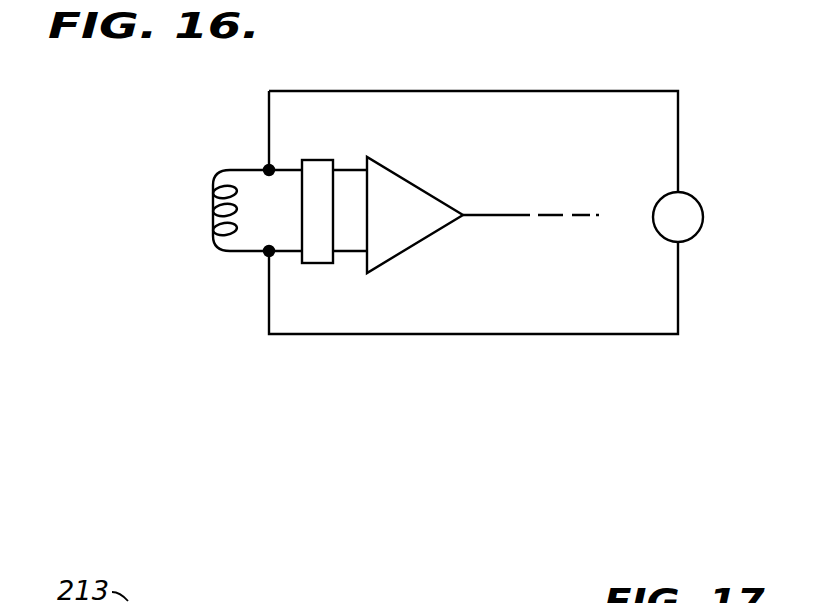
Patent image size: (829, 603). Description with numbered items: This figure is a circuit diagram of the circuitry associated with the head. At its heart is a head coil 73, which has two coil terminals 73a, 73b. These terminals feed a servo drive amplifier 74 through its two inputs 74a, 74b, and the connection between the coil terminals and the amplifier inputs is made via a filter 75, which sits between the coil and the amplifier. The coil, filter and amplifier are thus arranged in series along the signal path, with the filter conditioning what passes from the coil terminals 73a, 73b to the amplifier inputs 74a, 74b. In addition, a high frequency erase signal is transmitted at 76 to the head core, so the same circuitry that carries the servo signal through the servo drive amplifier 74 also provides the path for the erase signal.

The head coil 73 is at (213, 207).
The coil terminal 73a is at (245, 170).
The coil terminal 73b is at (236, 251).
The servo drive amplifier 74 is at (407, 230).
The amplifier input 74a is at (348, 172).
The amplifier input 74b is at (350, 255).
The filter 75 is at (313, 253).
The high frequency erase signal path 76 is at (568, 91).